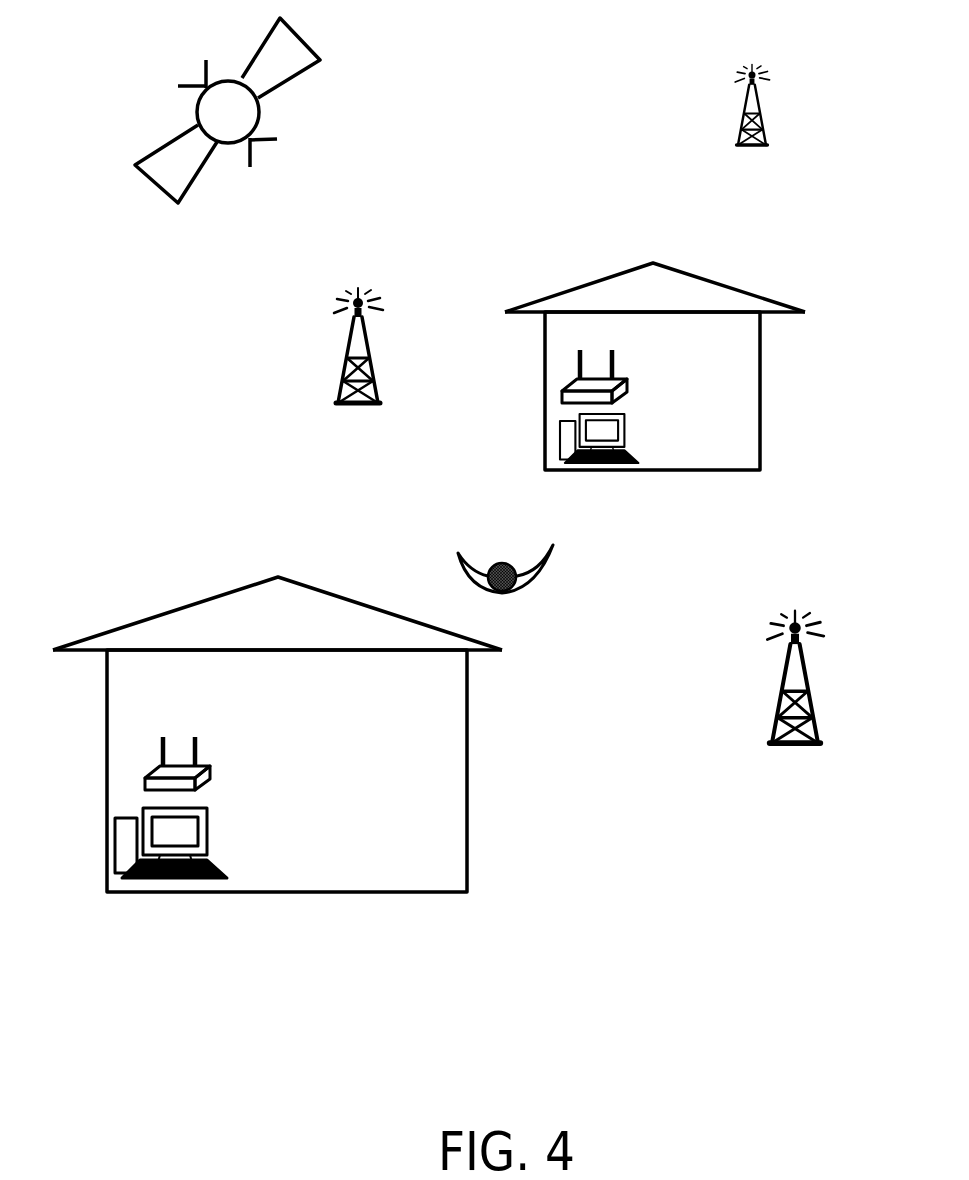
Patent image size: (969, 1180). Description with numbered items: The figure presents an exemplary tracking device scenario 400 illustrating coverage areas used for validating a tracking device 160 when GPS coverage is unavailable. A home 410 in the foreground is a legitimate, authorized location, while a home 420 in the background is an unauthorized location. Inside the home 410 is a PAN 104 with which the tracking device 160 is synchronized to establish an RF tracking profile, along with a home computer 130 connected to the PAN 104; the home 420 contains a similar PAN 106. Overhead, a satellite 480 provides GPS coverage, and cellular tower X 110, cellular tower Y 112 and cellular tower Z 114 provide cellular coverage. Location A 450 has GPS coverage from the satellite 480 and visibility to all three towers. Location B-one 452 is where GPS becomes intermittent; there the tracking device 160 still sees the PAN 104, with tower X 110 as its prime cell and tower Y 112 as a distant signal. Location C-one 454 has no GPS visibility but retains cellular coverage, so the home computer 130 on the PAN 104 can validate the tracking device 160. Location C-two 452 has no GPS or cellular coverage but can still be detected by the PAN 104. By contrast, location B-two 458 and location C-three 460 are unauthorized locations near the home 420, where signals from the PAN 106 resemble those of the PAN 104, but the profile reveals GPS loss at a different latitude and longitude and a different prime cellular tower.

The tracking device scenario 400 is at (545, 42).
The satellite 480 is at (212, 147).
The cellular tower Z 114 is at (740, 147).
The cellular tower Y 112 is at (343, 408).
The cellular tower X 110 is at (778, 747).
The home 420 is at (627, 272).
The home 410 is at (243, 587).
The PAN 106 is at (612, 378).
The PAN 104 is at (200, 763).
The home computer 130 is at (564, 443).
The tracking device 160 is at (458, 560).
The location A 450 is at (635, 643).
The location B1 / location C2 452 is at (293, 875).
The location C1 454 is at (412, 880).
The location B2 458 is at (813, 468).
The location C3 460 is at (673, 457).